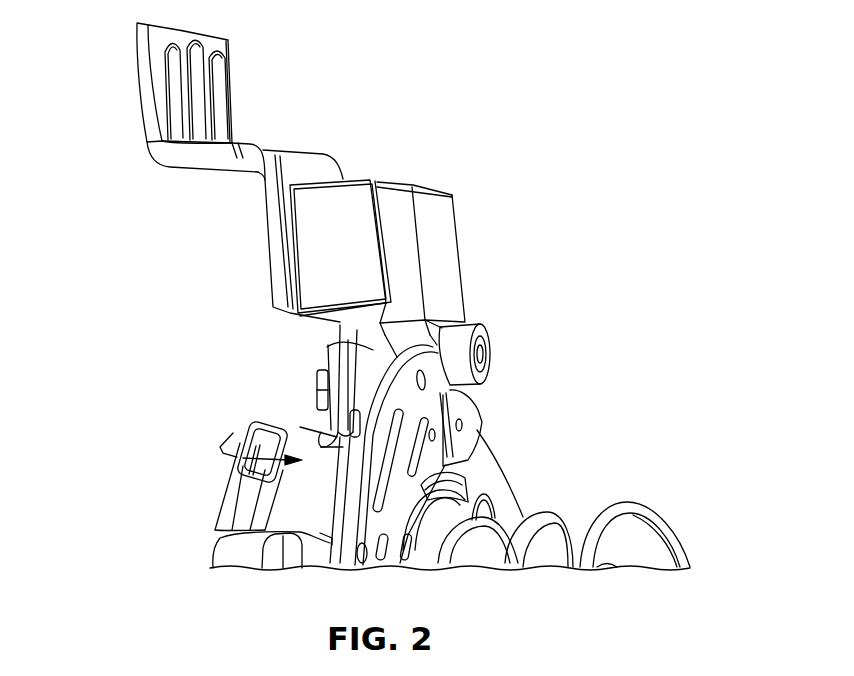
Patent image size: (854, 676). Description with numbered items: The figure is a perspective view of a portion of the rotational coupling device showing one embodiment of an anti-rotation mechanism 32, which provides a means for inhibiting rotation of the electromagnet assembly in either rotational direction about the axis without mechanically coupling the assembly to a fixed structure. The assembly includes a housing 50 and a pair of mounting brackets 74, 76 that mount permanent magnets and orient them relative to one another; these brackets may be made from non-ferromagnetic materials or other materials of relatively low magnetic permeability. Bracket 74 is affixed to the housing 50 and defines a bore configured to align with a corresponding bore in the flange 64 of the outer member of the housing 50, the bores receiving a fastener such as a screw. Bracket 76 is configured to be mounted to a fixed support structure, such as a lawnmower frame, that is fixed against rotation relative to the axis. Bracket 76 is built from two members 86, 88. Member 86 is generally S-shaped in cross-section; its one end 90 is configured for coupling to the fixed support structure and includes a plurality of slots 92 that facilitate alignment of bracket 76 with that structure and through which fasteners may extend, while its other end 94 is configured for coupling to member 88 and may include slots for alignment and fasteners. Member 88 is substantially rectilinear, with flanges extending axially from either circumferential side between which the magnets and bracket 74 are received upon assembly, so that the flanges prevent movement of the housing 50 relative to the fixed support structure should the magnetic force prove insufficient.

The anti-rotation mechanism 32 is at (431, 119).
The housing 50 is at (230, 460).
The flange 64 is at (370, 350).
The mounting bracket 74 is at (435, 262).
The mounting bracket 76 is at (267, 167).
The member 86 is at (163, 147).
The member 88 is at (327, 262).
The end 90 is at (150, 67).
The slots 92 is at (230, 88).
The end 94 is at (273, 222).